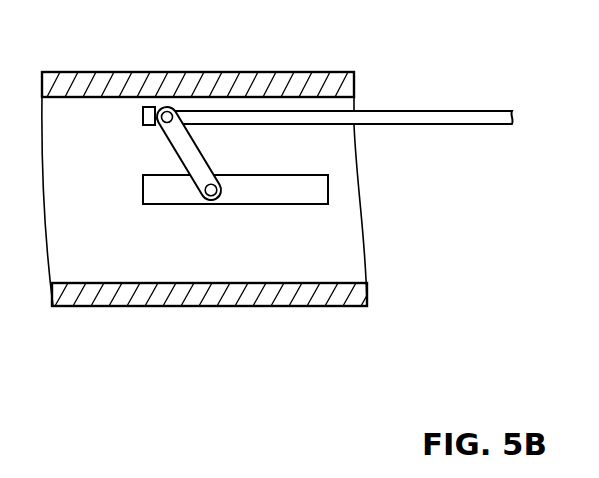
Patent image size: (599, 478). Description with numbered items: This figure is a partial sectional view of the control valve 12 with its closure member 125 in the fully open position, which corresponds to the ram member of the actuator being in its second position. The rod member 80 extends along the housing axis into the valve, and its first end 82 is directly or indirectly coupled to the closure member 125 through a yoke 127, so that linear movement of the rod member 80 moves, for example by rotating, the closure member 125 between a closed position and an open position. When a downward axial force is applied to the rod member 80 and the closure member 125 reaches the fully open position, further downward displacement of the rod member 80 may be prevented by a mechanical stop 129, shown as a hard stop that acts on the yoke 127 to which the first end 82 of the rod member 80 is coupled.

The control valve 12 is at (123, 290).
The rod member 80 is at (450, 108).
The first end 82 is at (174, 110).
The closure member 125 is at (290, 197).
The yoke 127 is at (170, 152).
The mechanical stop 129 is at (149, 107).